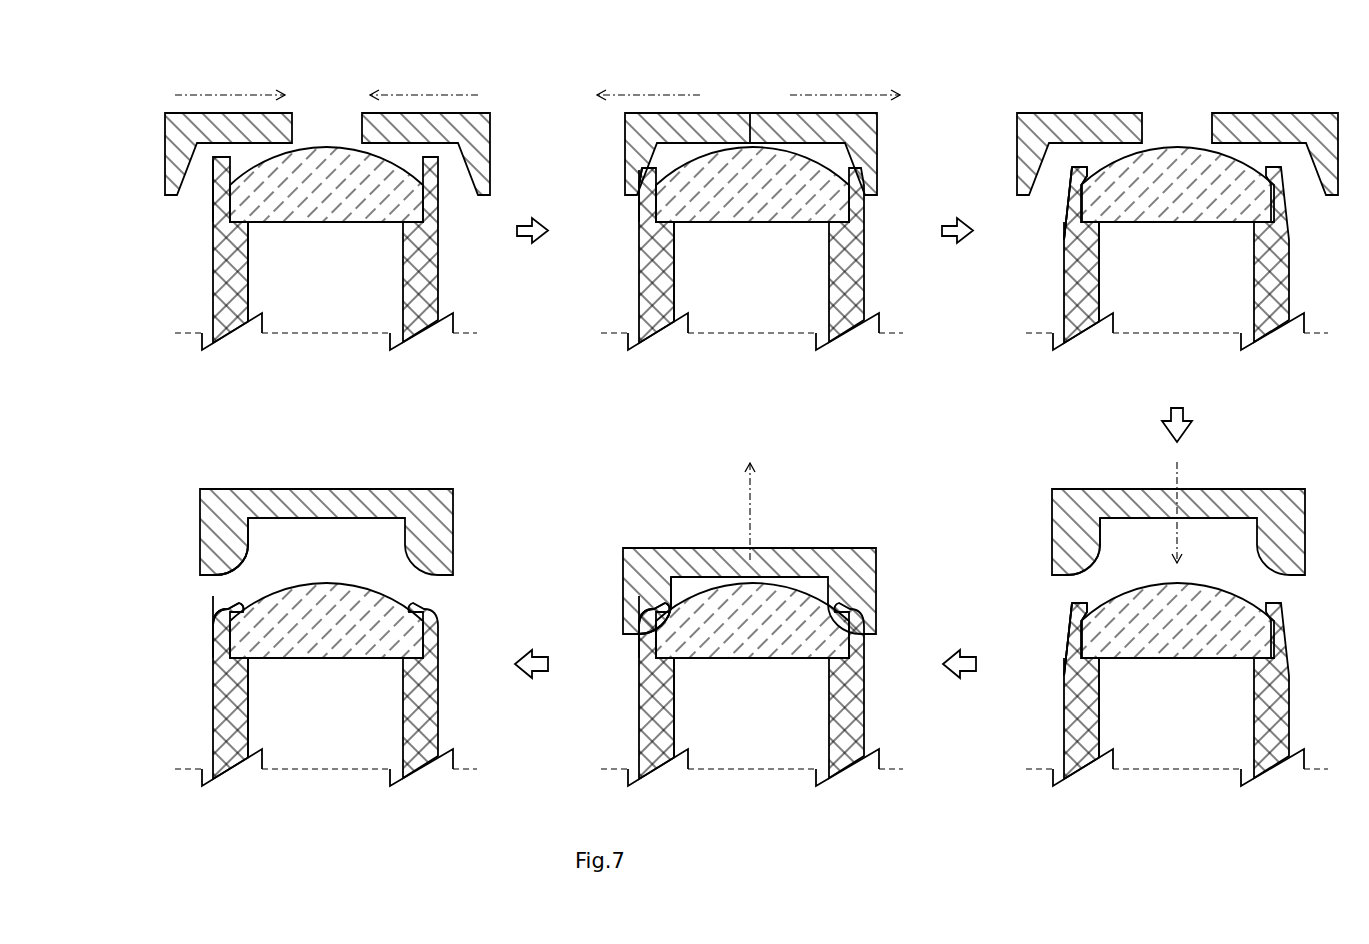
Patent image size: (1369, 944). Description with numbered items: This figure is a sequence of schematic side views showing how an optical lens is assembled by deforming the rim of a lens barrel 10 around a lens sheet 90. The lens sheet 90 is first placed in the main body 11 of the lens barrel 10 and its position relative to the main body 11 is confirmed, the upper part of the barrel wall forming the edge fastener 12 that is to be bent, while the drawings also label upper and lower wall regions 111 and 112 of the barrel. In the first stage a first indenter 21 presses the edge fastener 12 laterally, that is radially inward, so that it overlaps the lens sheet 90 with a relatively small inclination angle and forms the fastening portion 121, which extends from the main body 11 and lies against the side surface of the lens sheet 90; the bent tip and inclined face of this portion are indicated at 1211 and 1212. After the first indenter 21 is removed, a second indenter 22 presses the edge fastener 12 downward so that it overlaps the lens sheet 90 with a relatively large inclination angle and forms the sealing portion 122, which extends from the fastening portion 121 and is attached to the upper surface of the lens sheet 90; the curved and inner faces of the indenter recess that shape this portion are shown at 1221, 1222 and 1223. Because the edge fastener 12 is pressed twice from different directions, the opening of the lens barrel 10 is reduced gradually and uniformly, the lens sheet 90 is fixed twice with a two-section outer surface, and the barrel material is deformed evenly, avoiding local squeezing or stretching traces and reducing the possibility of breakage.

The lens barrel 10 is at (198, 333).
The main body 11 is at (203, 295).
The thin upper wall portion 111 is at (212, 203).
The thick lower wall portion 112 is at (240, 240).
The edge fastener 12 is at (582, 120).
The fastening portion 121 is at (606, 160).
The tip end of bent segment 1211 is at (650, 165).
The inclined surface of bent segment 1212 is at (640, 195).
The sealing portion 122 is at (230, 568).
The curved surface of hooked segment 1221 is at (237, 603).
The inner surface of hooked segment 1222 is at (238, 600).
The recess corner 1223 is at (252, 545).
The first indenter 21 is at (410, 113).
The second indenter 22 is at (355, 489).
The lens sheet 90 is at (333, 227).